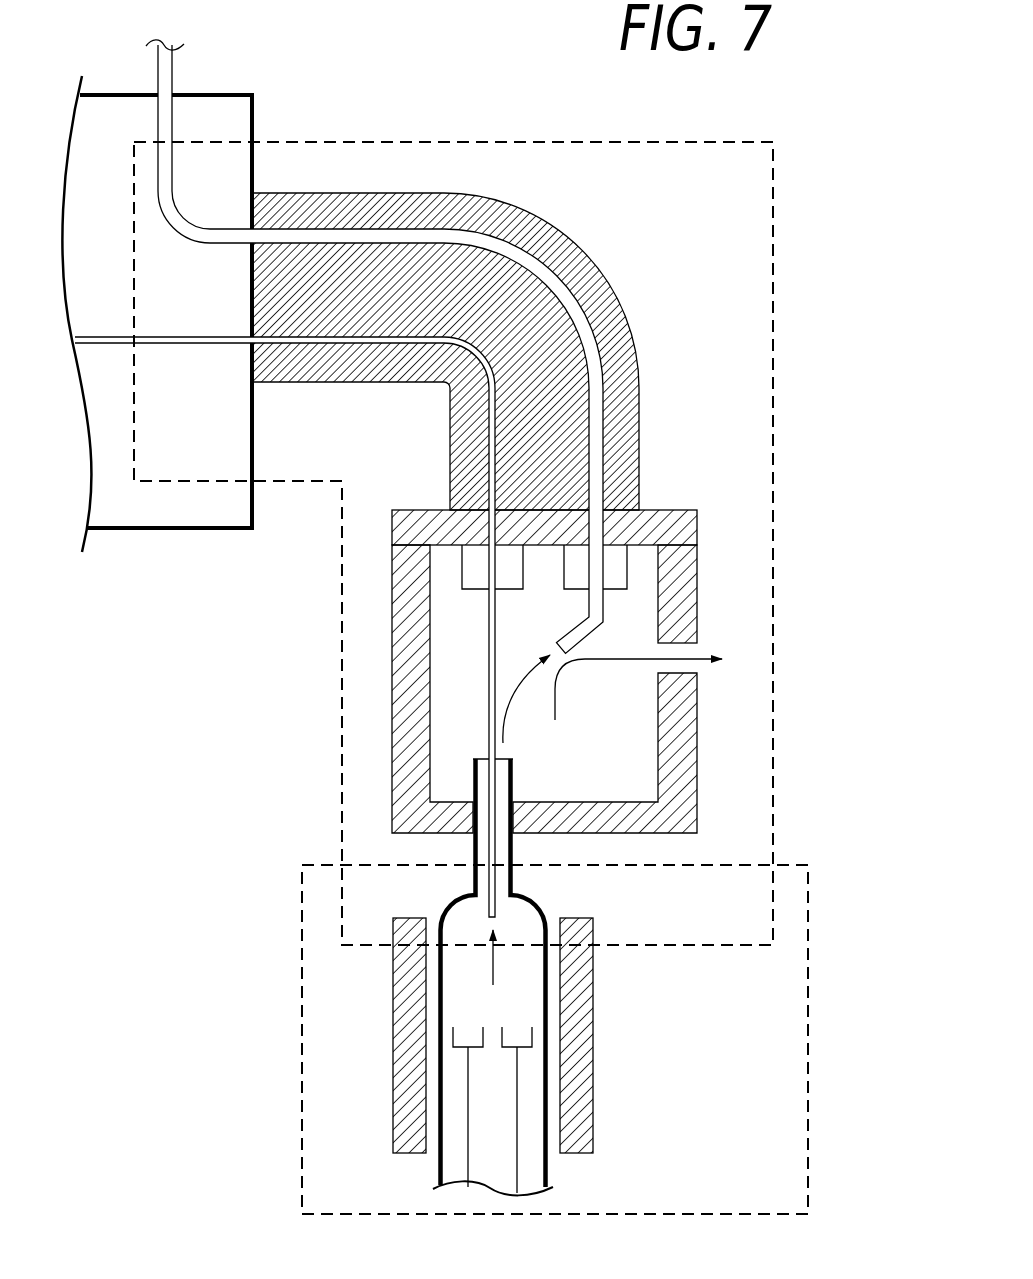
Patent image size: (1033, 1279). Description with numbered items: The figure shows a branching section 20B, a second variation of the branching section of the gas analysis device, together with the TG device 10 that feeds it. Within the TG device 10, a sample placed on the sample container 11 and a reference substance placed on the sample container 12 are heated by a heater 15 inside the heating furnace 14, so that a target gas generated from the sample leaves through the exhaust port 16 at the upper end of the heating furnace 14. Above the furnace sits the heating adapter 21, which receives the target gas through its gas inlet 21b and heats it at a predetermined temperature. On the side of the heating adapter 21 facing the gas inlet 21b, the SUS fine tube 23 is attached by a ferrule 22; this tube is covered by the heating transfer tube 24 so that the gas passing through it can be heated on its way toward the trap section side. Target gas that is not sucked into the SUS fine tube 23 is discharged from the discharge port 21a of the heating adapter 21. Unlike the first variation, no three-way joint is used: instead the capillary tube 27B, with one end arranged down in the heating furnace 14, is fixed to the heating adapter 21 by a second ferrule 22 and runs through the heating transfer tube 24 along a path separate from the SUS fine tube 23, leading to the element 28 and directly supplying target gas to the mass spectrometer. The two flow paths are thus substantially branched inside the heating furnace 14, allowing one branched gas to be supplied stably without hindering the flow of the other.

The TG device 10 is at (300, 1031).
The sample container 11 is at (458, 1030).
The sample container 12 is at (508, 1030).
The heating furnace 14 is at (538, 900).
The heater 15 is at (406, 1037).
The exhaust port 16 is at (484, 894).
The branching section 20B is at (341, 638).
The heating adapter 21 is at (688, 768).
The discharge port 21a is at (690, 652).
The gas inlet 21b is at (483, 770).
The ferrule 22 is at (481, 582).
The SUS fine tube 23 is at (597, 636).
The heating transfer tube 24 is at (639, 420).
The capillary tube 27B is at (98, 338).
The gas source 28 is at (253, 112).